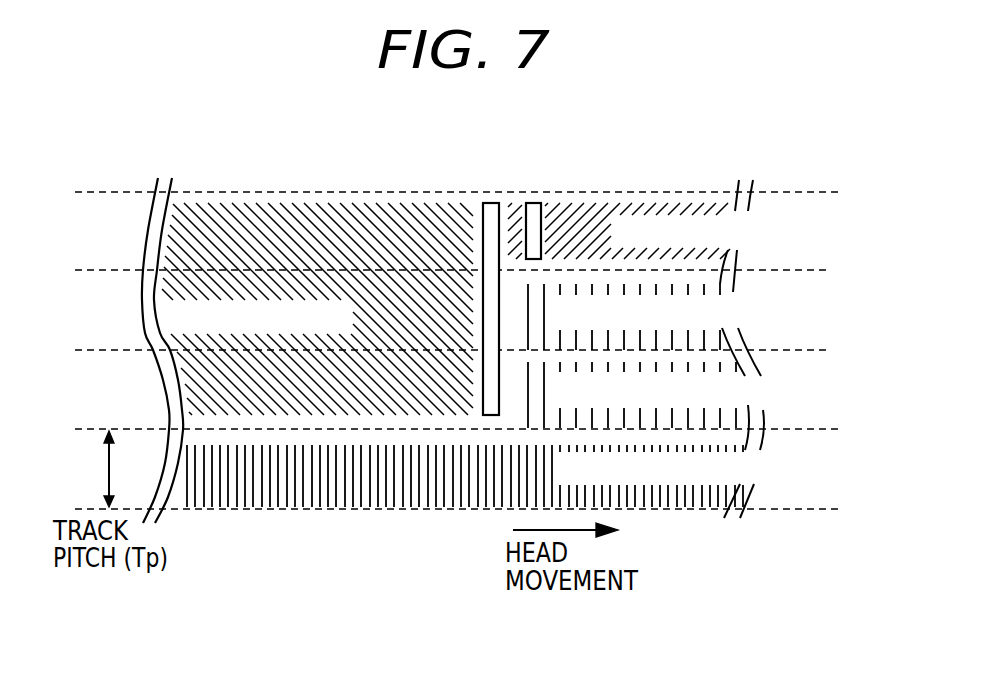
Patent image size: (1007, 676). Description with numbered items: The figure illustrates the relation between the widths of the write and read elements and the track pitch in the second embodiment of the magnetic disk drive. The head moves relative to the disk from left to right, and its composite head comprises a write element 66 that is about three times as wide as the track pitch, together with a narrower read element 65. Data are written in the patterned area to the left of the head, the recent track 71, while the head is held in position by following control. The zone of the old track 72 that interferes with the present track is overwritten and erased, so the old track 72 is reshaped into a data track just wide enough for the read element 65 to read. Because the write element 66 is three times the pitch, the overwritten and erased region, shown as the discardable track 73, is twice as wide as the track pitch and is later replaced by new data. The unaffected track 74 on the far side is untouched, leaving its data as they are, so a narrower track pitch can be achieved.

The read element 65 is at (533, 203).
The write element 66 is at (489, 203).
The recent track 71 is at (296, 309).
The old track 72 is at (652, 231).
The discardable track 73 is at (691, 356).
The unaffected track 74 is at (521, 476).